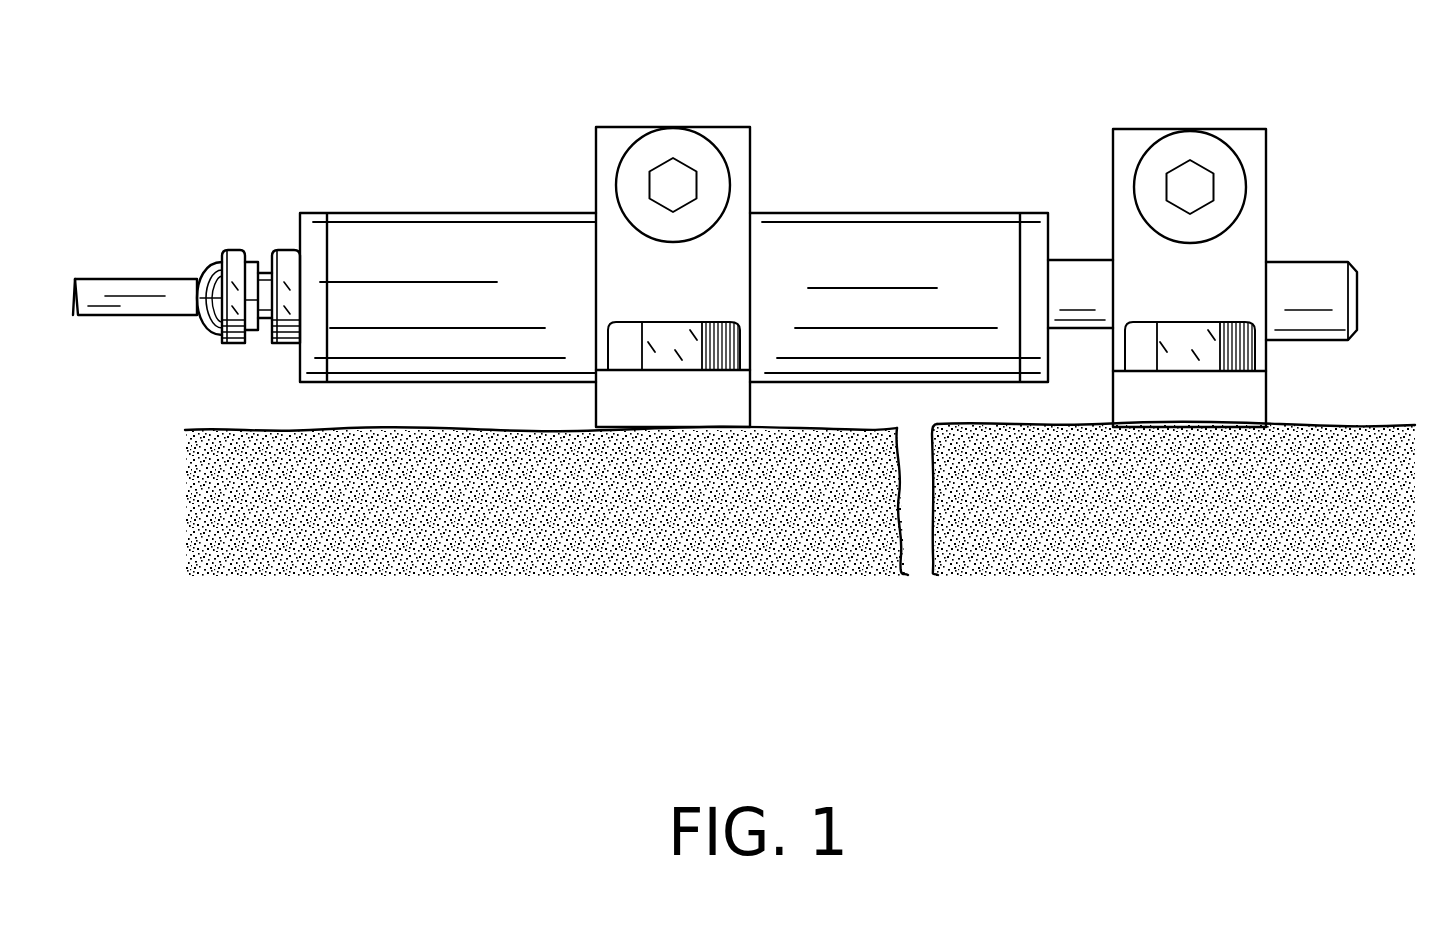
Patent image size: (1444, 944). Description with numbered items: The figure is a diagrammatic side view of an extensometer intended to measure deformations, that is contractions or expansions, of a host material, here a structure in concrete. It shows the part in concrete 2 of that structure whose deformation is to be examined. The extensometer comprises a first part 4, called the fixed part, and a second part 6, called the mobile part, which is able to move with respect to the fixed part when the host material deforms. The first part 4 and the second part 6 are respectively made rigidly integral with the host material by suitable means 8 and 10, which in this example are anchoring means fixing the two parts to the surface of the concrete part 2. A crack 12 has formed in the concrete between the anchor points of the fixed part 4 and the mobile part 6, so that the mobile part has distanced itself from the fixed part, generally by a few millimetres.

The part in concrete 2 is at (463, 540).
The first part (fixed part) 4 is at (353, 173).
The second part (mobile part) 6 is at (1367, 238).
The anchoring means 8 is at (612, 142).
The anchoring means 10 is at (1130, 147).
The crack 12 is at (917, 540).